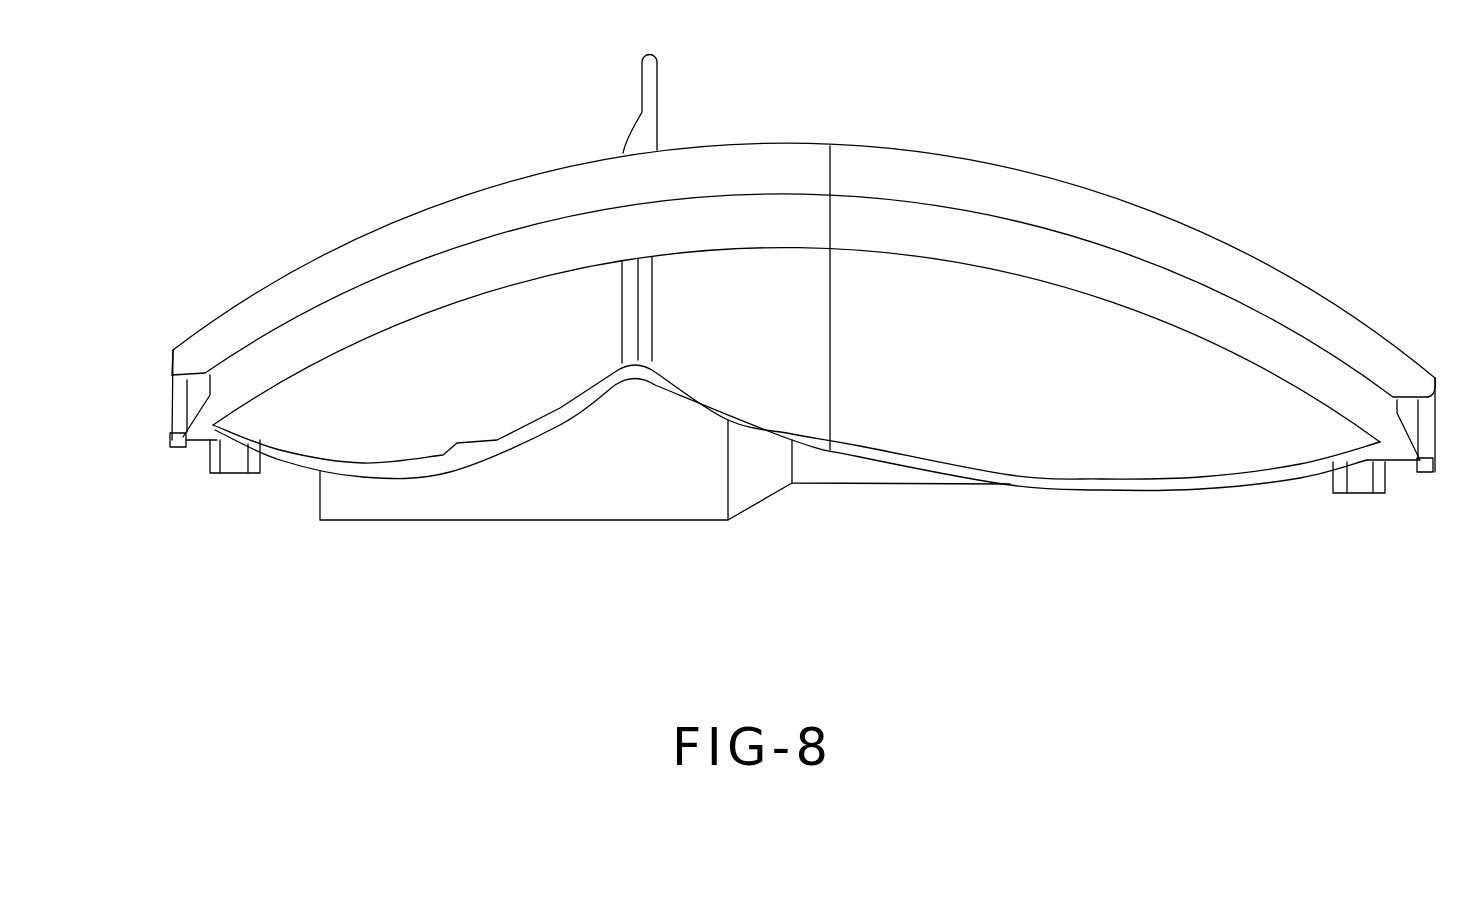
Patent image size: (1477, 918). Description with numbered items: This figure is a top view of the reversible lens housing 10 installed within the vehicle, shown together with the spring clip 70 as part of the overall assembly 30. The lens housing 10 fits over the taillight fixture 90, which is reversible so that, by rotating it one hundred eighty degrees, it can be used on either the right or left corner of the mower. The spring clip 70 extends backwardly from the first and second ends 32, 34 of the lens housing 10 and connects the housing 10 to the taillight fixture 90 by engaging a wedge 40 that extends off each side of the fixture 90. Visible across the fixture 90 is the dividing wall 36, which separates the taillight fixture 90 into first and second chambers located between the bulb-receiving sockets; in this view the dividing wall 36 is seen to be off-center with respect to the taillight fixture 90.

The lens housing 10 is at (1150, 223).
The lens assembly 30 is at (352, 121).
The first end 32 is at (1435, 378).
The second end 34 is at (173, 350).
The dividing wall 36 is at (648, 92).
The wedge 40 is at (204, 427).
The spring clip 70 is at (178, 440).
The taillight fixture 90 is at (377, 387).